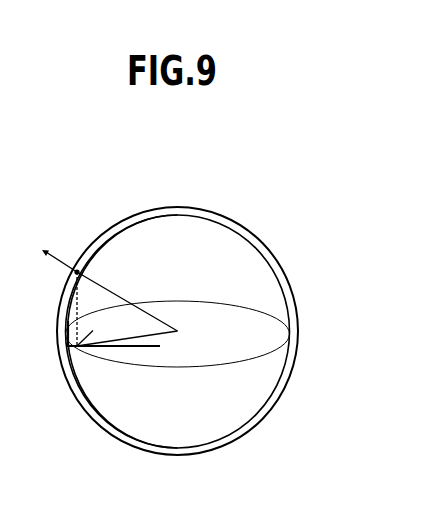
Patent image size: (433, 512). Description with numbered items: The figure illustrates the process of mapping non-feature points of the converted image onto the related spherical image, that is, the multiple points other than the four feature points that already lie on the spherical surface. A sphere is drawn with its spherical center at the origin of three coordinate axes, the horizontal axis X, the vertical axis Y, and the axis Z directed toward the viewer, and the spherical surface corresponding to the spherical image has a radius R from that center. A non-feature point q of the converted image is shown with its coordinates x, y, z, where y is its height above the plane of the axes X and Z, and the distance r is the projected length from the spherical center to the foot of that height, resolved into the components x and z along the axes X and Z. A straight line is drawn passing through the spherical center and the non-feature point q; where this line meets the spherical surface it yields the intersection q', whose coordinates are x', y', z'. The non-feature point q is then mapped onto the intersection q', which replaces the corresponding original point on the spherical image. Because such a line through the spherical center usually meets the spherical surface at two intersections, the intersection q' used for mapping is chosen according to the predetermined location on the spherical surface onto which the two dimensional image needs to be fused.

The non-feature point q is at (85, 270).
The intersection q' is at (59, 258).
The sphere radius to point q R is at (127, 301).
The projected radius in XZ plane r is at (127, 335).
The x coordinate of non-feature point x is at (102, 329).
The y coordinate of non-feature point y is at (84, 309).
The z coordinate of non-feature point z is at (156, 340).
The x coordinate of intersection x' is at (113, 356).
The y coordinate of intersection y' is at (60, 329).
The z coordinate of intersection z' is at (77, 329).
The X axis X is at (40, 330).
The Y axis Y is at (178, 331).
The Z axis Z is at (178, 331).